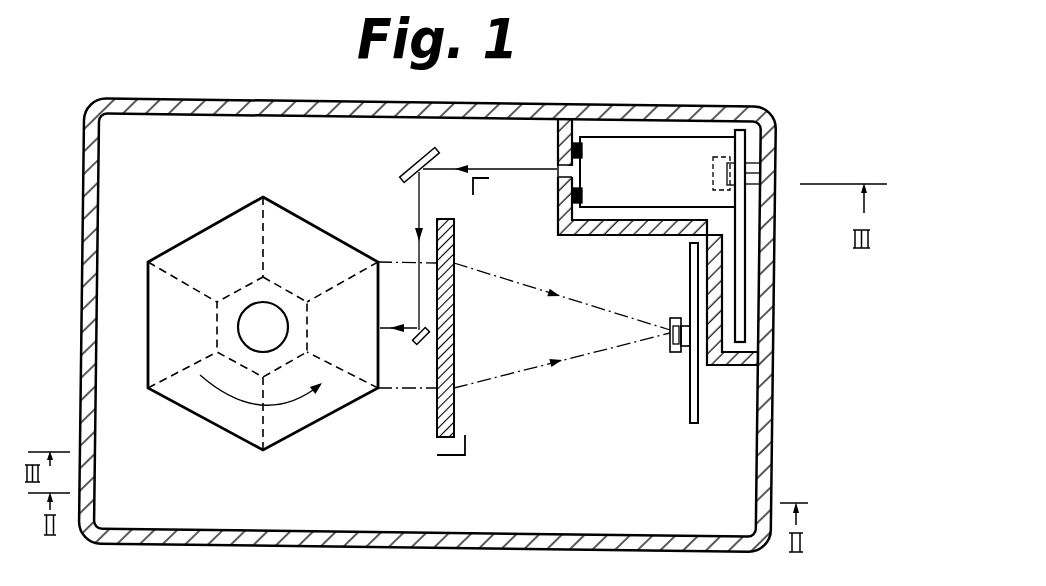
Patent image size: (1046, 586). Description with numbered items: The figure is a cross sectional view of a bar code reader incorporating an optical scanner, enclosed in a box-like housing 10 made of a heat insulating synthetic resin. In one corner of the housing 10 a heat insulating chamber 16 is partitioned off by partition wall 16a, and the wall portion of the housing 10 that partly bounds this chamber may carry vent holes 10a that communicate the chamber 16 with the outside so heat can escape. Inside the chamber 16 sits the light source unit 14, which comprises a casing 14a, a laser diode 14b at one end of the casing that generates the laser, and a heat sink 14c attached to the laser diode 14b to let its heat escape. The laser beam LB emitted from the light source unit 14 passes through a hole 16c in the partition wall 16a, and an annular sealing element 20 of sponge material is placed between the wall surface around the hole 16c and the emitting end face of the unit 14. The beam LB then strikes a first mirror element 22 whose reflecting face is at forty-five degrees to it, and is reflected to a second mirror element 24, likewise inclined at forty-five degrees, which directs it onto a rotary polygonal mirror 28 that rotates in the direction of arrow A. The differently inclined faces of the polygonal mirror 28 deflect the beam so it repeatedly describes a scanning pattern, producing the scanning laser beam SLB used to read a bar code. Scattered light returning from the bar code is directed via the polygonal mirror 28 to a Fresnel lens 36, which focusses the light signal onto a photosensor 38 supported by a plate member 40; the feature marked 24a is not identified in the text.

The housing 10 is at (207, 95).
The vent holes 10a is at (777, 150).
The light source unit 14 is at (667, 128).
The casing 14a is at (610, 137).
The laser diode 14b is at (713, 173).
The heat sink 14c is at (746, 240).
The heat insulating chamber 16 is at (606, 227).
The partition wall 16a is at (564, 235).
The hole 16c is at (557, 180).
The annular sealing element 20 is at (582, 151).
The first mirror element 22 is at (409, 171).
The second mirror element 24 is at (416, 343).
The holder bottom wall 24a is at (655, 237).
The rotary polygonal mirror 28 is at (321, 429).
The Fresnel lens 36 is at (456, 335).
The photosensor 38 is at (672, 349).
The plate member 40 is at (699, 414).
The laser beam LB is at (514, 168).
The scanning laser beam SLB is at (535, 372).
The arrow A is at (203, 379).